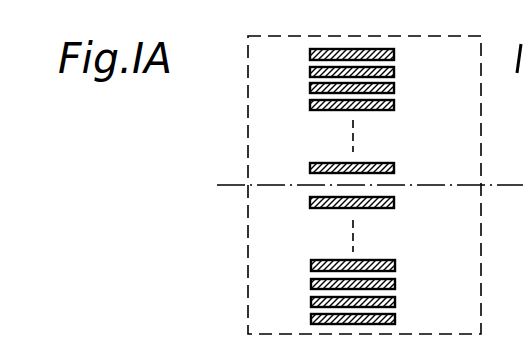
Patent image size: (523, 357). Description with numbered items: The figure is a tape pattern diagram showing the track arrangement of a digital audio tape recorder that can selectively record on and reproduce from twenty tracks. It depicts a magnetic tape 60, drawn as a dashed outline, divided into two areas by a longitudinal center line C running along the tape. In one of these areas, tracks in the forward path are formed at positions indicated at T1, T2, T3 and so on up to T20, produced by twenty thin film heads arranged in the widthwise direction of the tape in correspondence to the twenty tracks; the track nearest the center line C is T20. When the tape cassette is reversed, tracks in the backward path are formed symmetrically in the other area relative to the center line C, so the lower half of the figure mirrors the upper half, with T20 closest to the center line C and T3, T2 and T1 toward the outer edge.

The magnetic tape 60 is at (363, 36).
The track position T1 is at (396, 54).
The track position T2 is at (396, 72).
The track position T3 is at (396, 88).
The track position T20 is at (396, 168).
The longitudinal center line C is at (509, 187).